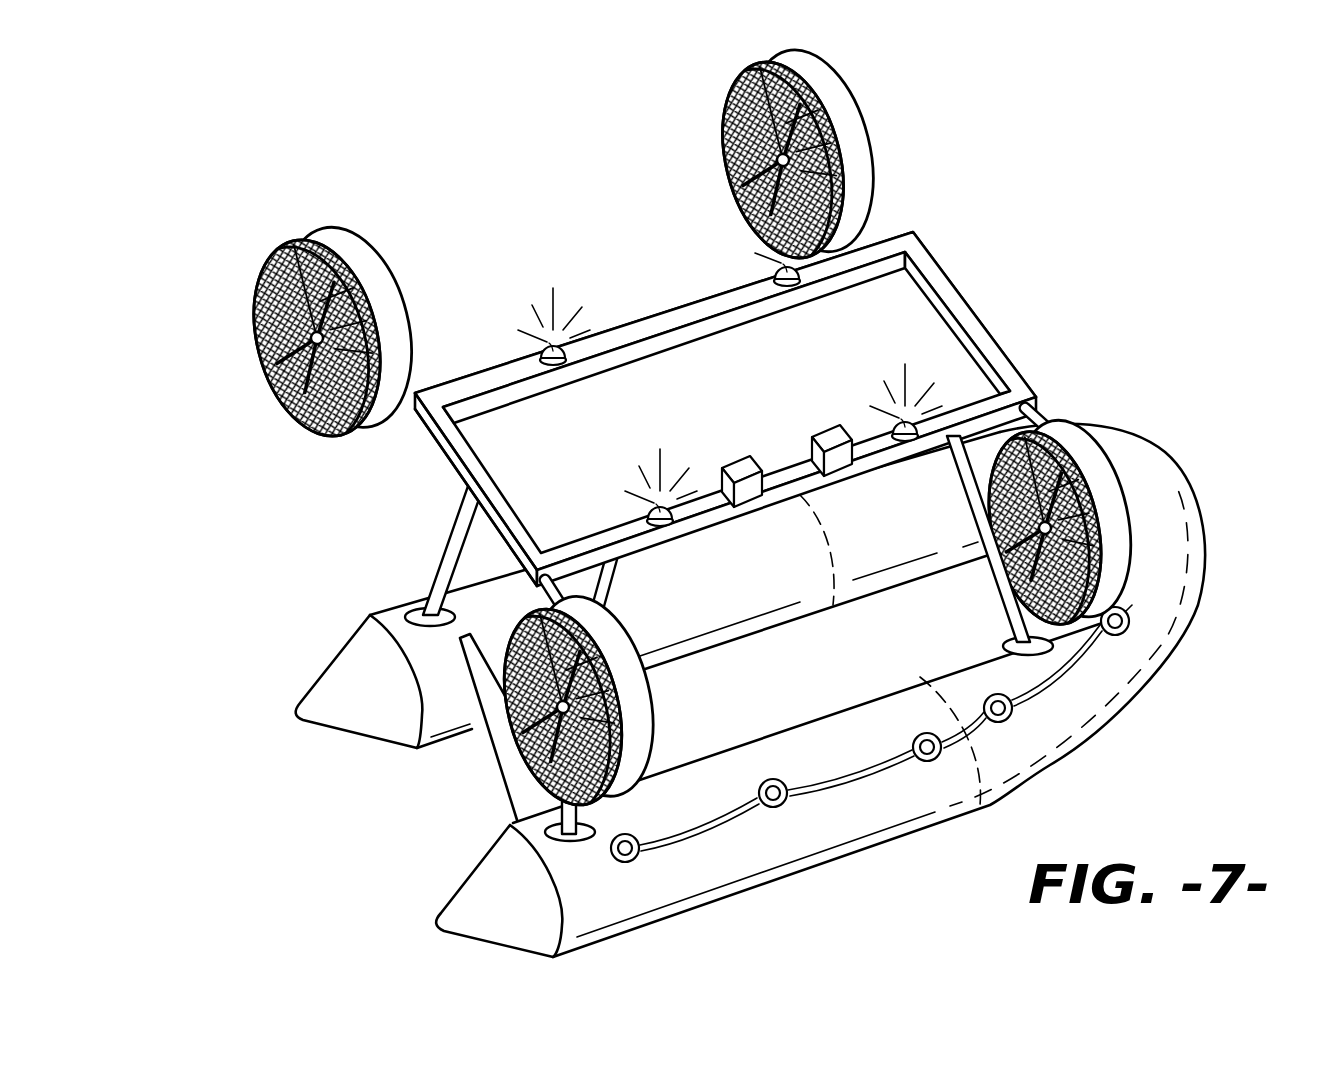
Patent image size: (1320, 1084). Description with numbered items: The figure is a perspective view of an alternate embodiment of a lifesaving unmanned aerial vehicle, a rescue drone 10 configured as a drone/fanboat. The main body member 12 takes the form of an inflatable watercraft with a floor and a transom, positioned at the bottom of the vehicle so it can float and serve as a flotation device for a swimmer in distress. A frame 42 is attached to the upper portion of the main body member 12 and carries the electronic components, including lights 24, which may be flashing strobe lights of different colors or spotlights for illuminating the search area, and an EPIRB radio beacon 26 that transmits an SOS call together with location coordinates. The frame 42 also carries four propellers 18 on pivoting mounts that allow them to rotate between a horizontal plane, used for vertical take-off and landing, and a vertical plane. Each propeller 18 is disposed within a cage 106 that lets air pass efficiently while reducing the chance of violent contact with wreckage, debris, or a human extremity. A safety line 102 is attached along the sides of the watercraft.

The rescue drone 10 is at (226, 500).
The main body member 12 is at (1143, 480).
The propeller 18 is at (296, 337).
The lights 24 is at (545, 336).
The EPIRB radio beacon 26 is at (742, 470).
The frame 42 is at (943, 283).
The safety line 102 is at (833, 778).
The cage 106 is at (333, 247).